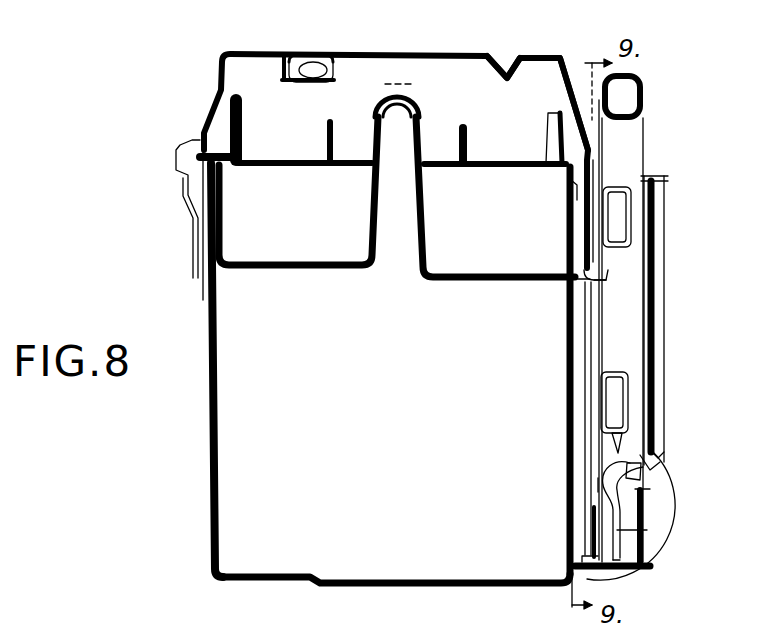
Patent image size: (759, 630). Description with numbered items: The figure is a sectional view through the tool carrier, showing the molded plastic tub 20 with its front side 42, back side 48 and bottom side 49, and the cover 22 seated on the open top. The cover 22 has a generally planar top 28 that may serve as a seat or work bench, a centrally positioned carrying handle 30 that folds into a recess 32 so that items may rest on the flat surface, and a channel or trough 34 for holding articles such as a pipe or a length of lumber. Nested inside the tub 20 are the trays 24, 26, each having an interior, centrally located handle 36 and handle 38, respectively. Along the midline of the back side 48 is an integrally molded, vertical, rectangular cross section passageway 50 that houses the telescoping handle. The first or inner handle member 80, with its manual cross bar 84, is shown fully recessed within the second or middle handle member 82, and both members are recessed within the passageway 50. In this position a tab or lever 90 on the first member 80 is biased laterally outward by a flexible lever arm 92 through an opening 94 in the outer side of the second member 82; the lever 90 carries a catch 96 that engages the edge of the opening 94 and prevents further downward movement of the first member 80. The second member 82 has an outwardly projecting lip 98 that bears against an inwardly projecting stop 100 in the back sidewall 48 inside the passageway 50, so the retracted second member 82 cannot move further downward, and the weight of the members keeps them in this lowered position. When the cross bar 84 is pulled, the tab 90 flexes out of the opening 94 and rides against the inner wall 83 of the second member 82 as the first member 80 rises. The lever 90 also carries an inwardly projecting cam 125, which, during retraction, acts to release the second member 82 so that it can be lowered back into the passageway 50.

The tub 20 is at (352, 373).
The cover 22 is at (370, 290).
The tray 24 is at (304, 262).
The tray 26 is at (280, 158).
The top 28 is at (470, 54).
The carrying handle 30 is at (289, 72).
The recess 32 is at (332, 82).
The trough 34 is at (545, 52).
The handle 36 is at (428, 203).
The handle 38 is at (420, 102).
The front side 42 is at (209, 413).
The back side 48 is at (566, 454).
The bottom side 49 is at (282, 575).
The passageway 50 is at (683, 320).
The first telescoping member 80 is at (658, 309).
The second telescoping member 82 is at (652, 297).
The inner wall 83 is at (637, 322).
The manual cross bar 84 is at (642, 74).
The tab 90 is at (653, 467).
The lever arm 92 is at (647, 530).
The opening 94 is at (630, 460).
The catch 96 is at (643, 487).
The lip 98 is at (598, 278).
The stop 100 is at (584, 280).
The cam 125 is at (600, 481).